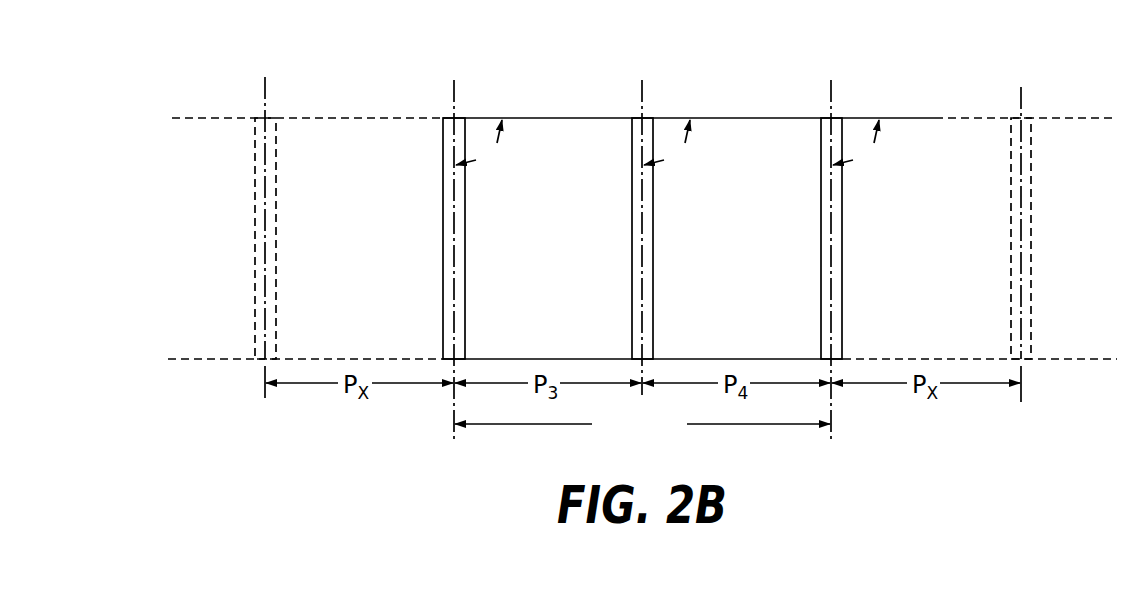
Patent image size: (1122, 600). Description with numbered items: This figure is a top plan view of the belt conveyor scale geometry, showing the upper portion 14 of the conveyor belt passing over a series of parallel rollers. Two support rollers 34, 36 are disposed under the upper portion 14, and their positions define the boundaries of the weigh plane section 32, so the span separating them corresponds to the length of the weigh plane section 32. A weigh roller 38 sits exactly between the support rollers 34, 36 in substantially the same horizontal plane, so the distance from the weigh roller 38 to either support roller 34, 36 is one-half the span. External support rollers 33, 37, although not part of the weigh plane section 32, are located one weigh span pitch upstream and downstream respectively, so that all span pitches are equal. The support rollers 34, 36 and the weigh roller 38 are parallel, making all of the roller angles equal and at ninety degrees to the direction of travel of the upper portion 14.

The upper portion of conveyor belt 14 is at (912, 118).
The external support roller 33 is at (255, 211).
The support roller 34 is at (443, 210).
The weigh roller 38 is at (632, 211).
The support roller 36 is at (821, 211).
The external support roller 37 is at (1011, 211).
The weigh plane section 32 is at (642, 426).